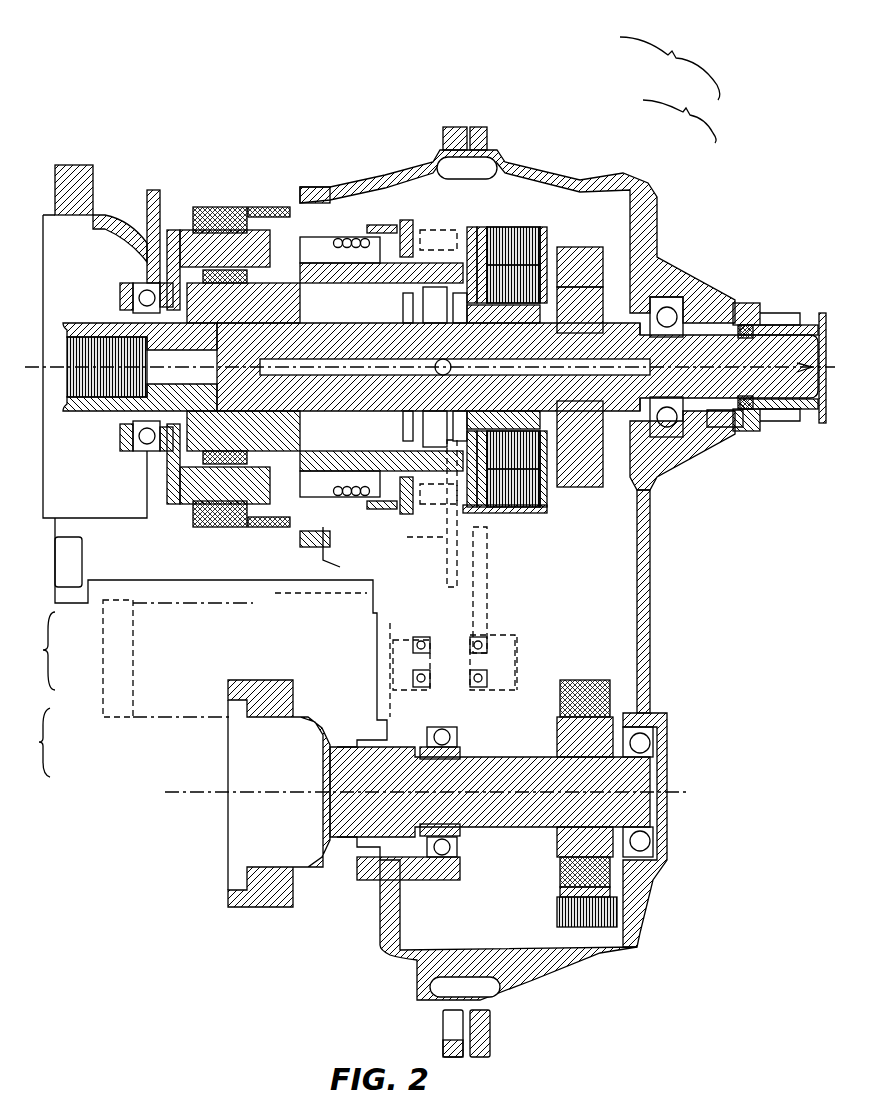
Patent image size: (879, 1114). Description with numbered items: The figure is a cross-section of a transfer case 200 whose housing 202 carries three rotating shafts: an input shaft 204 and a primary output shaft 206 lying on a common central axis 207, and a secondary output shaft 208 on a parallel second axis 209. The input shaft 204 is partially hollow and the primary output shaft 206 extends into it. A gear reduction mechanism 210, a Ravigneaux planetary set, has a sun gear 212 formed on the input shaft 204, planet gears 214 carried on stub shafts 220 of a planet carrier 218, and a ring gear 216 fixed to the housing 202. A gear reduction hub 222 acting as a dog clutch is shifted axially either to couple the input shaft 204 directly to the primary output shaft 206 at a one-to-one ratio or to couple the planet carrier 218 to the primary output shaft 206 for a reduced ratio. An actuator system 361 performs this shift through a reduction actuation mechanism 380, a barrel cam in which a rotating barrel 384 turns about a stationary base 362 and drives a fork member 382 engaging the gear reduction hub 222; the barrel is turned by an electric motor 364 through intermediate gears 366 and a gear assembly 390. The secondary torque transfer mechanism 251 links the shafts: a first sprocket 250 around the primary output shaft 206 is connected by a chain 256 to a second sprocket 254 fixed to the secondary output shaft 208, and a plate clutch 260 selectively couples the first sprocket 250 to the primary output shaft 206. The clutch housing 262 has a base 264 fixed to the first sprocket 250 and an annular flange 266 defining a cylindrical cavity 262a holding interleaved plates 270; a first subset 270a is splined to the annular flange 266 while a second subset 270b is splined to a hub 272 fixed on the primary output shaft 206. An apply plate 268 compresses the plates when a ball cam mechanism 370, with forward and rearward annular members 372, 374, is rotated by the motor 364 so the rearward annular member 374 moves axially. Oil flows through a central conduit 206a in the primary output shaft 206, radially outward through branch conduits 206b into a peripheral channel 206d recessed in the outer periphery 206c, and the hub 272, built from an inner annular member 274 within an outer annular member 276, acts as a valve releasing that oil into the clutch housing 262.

The transfer case 200 is at (756, 134).
The housing 202 is at (657, 200).
The input shaft 204 is at (90, 382).
The primary output shaft 206 is at (700, 345).
The central conduit 206a is at (392, 410).
The branch conduits 206b is at (520, 372).
The outer periphery 206c is at (500, 347).
The peripheral channel 206d is at (430, 325).
The central axis 207 is at (773, 357).
The secondary output shaft 208 is at (330, 775).
The second axis 209 is at (682, 792).
The gear reduction mechanism 210 is at (197, 148).
The sun gear 212 is at (288, 205).
The planet gears 214 is at (242, 228).
The ring gear 216 is at (233, 235).
The planet carrier 218 is at (300, 290).
The stub shafts 220 is at (163, 240).
The gear reduction hub 222 is at (100, 346).
The first sprocket 250 is at (650, 197).
The secondary torque transfer mechanism 251 is at (555, 99).
The second sprocket 254 is at (597, 733).
The chain 256 is at (600, 923).
The plate clutch 260 is at (670, 63).
The clutch housing 262 is at (510, 235).
The cylindrical cavity 262a is at (462, 248).
The base 264 is at (577, 245).
The annular flange 266 is at (468, 225).
The apply plate 268 is at (492, 230).
The interleaved plates 270 is at (601, 293).
The first subset of interleaved plates 270a is at (537, 240).
The second subset of interleaved plates 270b is at (550, 232).
The hub 272 is at (672, 452).
The inner annular member 274 is at (587, 425).
The outer annular member 276 is at (577, 285).
The actuator system 361 is at (369, 104).
The base 362 is at (332, 237).
The electric motor 364 is at (210, 672).
The intermediate gears 366 is at (387, 607).
The ball cam mechanism 370 is at (31, 746).
The forward annular member 372 is at (400, 497).
The rearward annular member 374 is at (433, 507).
The reduction actuation mechanism 380 is at (235, 565).
The fork member 382 is at (195, 512).
The rotating barrel 384 is at (235, 522).
The gear assembly 390 is at (428, 212).